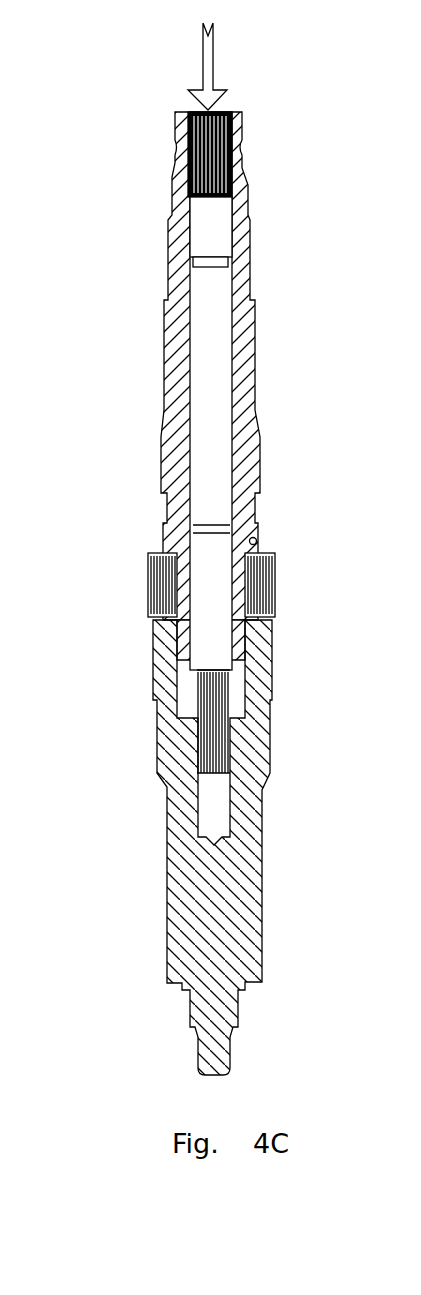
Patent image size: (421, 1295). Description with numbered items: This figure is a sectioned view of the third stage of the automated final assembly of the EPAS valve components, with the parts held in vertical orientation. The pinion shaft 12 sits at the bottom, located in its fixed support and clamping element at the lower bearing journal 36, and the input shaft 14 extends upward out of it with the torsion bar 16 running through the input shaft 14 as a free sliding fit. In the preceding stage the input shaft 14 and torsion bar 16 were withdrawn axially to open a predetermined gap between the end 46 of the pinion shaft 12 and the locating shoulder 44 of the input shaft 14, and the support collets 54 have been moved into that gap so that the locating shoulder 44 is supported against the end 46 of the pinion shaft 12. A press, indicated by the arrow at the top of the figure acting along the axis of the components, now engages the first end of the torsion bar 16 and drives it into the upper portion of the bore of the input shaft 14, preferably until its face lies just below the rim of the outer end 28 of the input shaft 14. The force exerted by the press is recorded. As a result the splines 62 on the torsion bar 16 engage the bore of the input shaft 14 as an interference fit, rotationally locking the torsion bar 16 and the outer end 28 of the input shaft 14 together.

The pinion shaft 12 is at (187, 847).
The input shaft 14 is at (192, 398).
The torsion bar 16 is at (213, 362).
The outer end of input shaft 28 is at (290, 119).
The lower bearing journal 36 is at (222, 1050).
The locating shoulder 44 is at (257, 542).
The end of pinion shaft 46 is at (272, 637).
The support collets 54 is at (148, 583).
The splines 62 is at (243, 175).